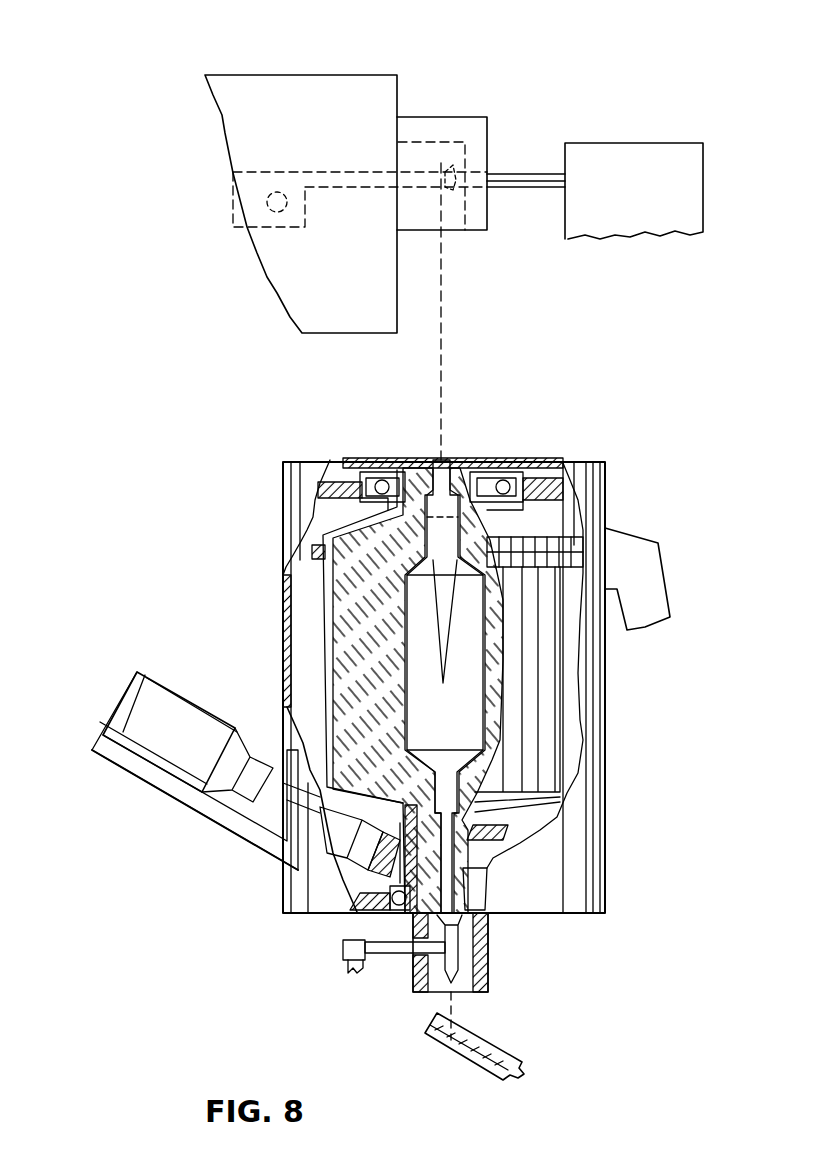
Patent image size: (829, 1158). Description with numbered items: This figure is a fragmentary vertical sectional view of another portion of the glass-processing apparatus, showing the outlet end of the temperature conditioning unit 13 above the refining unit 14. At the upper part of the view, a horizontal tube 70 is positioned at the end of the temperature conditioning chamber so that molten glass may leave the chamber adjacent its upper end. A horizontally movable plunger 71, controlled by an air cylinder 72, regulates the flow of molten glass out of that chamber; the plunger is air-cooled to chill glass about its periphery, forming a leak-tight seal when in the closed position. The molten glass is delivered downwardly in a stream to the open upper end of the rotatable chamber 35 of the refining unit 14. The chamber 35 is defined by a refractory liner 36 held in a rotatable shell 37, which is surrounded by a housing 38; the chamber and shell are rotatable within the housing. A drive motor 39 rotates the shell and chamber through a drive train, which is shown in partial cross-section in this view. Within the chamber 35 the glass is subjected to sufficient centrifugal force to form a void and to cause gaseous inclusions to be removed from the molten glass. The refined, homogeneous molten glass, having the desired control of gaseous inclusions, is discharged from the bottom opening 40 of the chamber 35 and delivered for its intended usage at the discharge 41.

The temperature conditioning unit 13 is at (348, 58).
The horizontal tube 70 is at (353, 161).
The horizontally movable plunger 71 is at (529, 172).
The air cylinder 72 is at (613, 143).
The refining unit 14 is at (644, 458).
The rotatable shell 37 is at (334, 521).
The refractory liner 36 is at (347, 603).
The housing 38 is at (283, 656).
The rotatable chamber 35 is at (483, 640).
The drive motor 39 is at (158, 688).
The bottom opening 40 is at (488, 958).
The discharge 41 is at (492, 1044).